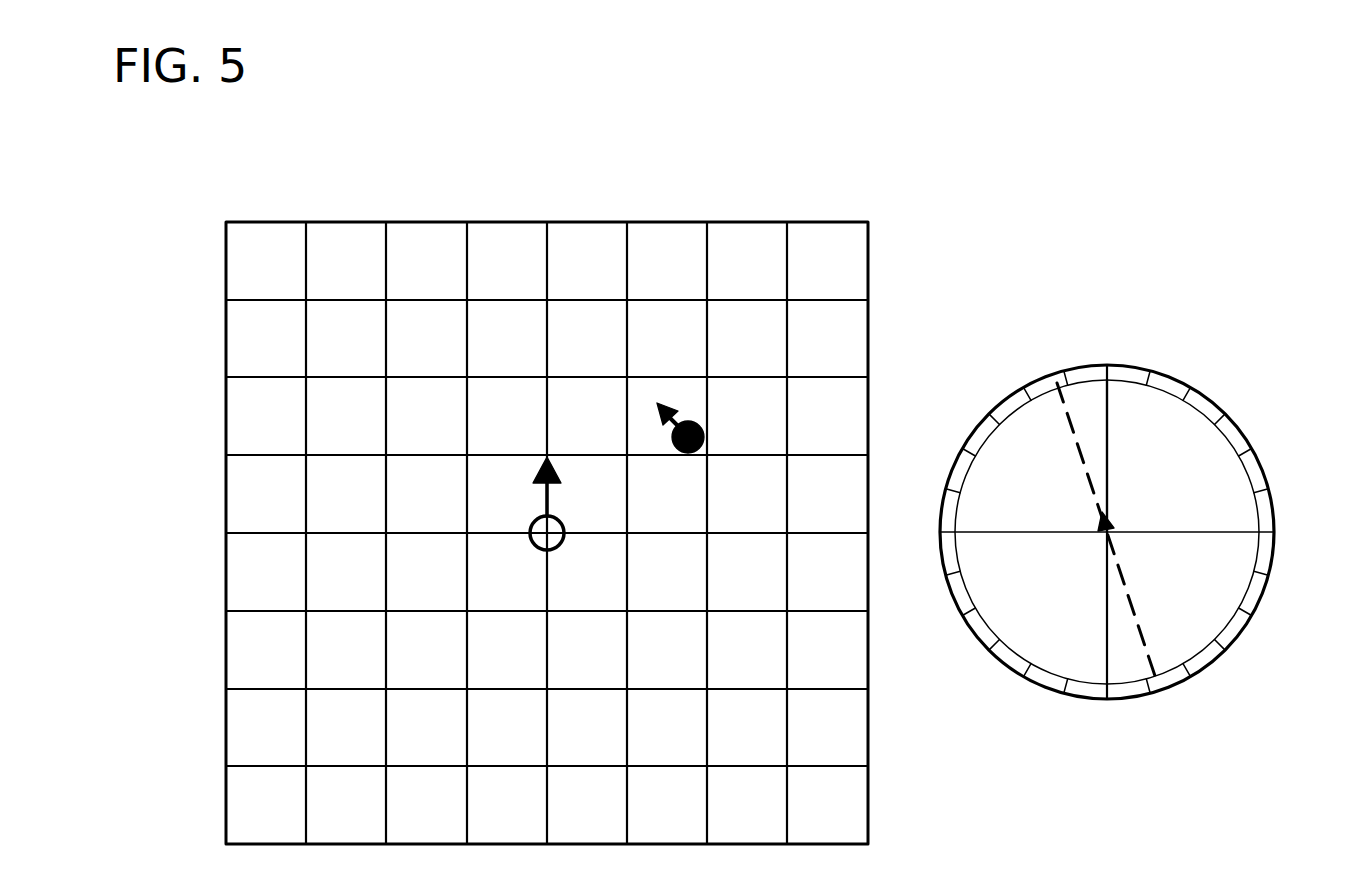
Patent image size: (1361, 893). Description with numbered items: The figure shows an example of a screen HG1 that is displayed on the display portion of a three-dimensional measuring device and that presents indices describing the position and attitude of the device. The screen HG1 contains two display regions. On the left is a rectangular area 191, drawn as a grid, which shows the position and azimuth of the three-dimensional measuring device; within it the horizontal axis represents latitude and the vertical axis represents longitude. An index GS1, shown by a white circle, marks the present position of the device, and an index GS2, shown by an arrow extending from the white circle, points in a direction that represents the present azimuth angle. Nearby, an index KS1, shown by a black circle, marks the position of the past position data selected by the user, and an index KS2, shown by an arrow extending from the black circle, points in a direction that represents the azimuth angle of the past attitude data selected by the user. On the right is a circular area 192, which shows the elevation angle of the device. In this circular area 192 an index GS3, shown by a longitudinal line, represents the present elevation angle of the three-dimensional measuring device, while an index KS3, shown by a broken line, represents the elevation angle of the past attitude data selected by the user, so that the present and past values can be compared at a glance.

The screen HG1 is at (930, 140).
The rectangular area 191 is at (226, 265).
The circular area 192 is at (1210, 400).
The index shown by the white circle GS1 is at (530, 527).
The index shown by the arrow from the white circle GS2 is at (545, 500).
The index shown by the longitudinal line GS3 is at (1110, 428).
The index shown by the black circle KS1 is at (705, 433).
The index shown by the arrow from the black circle KS2 is at (683, 420).
The index shown by the broken line KS3 is at (1072, 440).